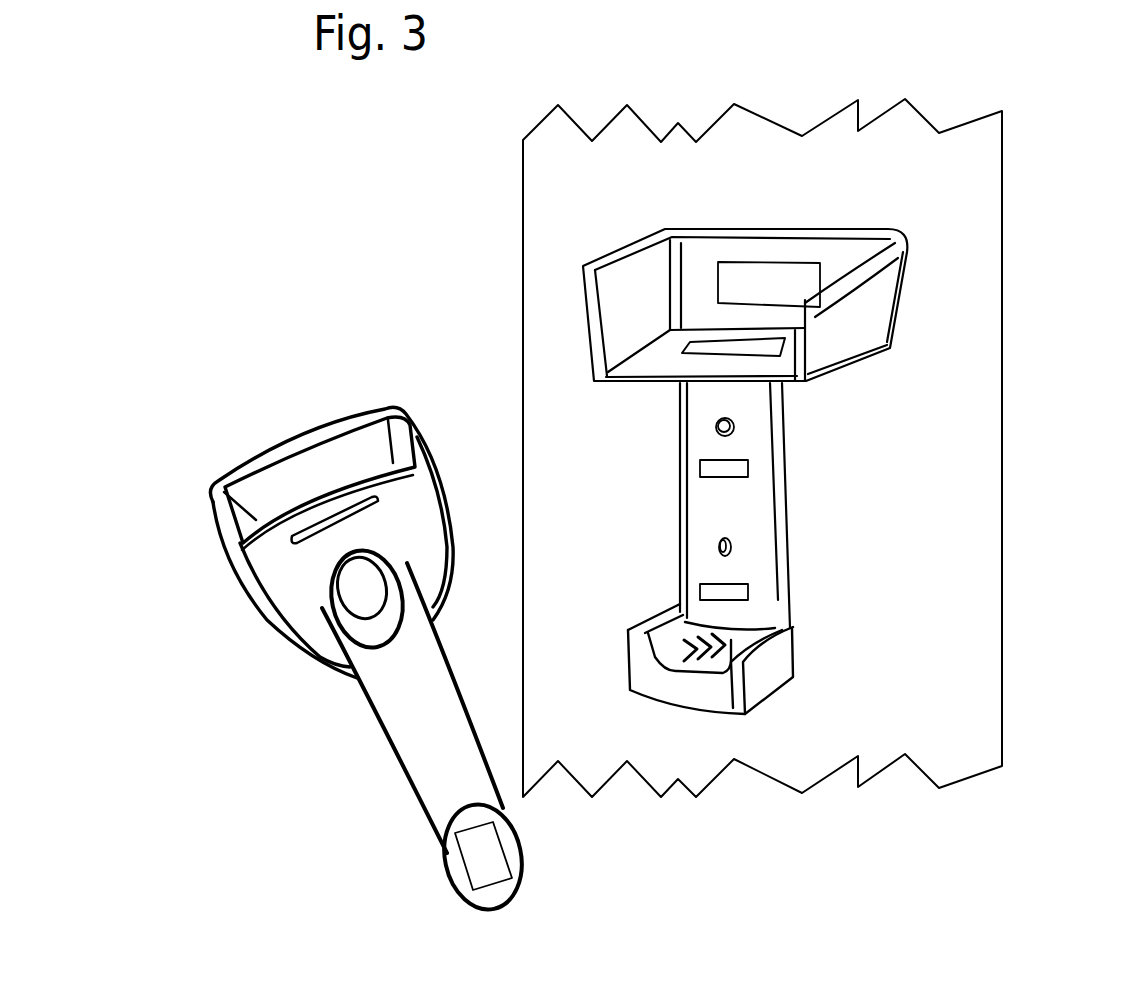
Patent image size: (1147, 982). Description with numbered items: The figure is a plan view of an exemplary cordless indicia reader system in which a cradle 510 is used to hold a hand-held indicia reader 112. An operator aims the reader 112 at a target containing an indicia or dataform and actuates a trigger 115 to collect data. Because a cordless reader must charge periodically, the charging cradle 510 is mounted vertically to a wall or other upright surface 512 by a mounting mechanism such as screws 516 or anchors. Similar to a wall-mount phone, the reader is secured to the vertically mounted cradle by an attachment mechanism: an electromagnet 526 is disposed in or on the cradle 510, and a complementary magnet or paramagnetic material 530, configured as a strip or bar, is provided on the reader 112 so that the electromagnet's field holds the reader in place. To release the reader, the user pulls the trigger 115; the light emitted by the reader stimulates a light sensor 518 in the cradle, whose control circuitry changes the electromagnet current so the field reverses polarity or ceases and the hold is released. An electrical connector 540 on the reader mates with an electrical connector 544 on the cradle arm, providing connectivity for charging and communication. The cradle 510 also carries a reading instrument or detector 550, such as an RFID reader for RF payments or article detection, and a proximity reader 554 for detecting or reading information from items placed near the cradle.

The hand-held indicia reader 112 is at (294, 330).
The trigger 115 is at (426, 740).
The paramagnetic material 530 is at (290, 538).
The electrical connector 540 is at (492, 850).
The cradle 510 is at (883, 305).
The wall or other upright surface 512 is at (985, 345).
The light sensor 518 is at (747, 282).
The electromagnet 526 is at (683, 355).
The screws 516 is at (734, 414).
The reading instrument or detector 550 is at (750, 468).
The proximity reader 554 is at (750, 590).
The electrical connector 544 is at (679, 660).